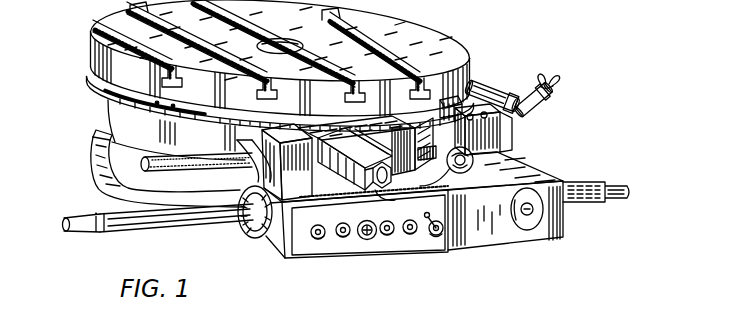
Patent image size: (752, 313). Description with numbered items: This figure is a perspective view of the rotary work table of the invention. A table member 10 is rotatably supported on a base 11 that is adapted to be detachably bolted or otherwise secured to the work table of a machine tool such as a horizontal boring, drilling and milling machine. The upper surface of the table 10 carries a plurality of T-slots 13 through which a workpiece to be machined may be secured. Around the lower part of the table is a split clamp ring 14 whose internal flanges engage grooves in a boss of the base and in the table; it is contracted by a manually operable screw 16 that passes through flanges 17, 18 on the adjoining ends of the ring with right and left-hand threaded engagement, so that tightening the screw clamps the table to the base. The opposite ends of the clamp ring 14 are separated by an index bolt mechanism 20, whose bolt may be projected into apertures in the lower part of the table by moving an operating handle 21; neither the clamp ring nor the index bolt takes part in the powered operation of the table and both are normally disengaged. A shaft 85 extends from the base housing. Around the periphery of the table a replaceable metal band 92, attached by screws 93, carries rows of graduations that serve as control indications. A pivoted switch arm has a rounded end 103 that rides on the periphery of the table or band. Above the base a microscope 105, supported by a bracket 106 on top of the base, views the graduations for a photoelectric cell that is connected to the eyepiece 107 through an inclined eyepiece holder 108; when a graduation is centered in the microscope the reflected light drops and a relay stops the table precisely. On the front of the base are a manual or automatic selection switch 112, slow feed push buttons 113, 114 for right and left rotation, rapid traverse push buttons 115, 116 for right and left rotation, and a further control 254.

The table member 10 is at (280, 58).
The base 11 is at (486, 245).
The T-slots 13 is at (214, 46).
The split clamp ring 14 is at (108, 129).
The manually operable screw 16 is at (206, 153).
The flange 17 is at (277, 163).
The flange 18 is at (387, 132).
The index bolt mechanism 20 is at (328, 121).
The operating handle 21 is at (472, 168).
The hand crank shaft 85 is at (194, 226).
The band 92 is at (210, 104).
The screws 93 is at (151, 96).
The rounded end 103 is at (443, 102).
The microscope 105 is at (492, 85).
The bracket 106 is at (500, 139).
The eyepiece 107 is at (541, 102).
The inclined eyepiece holder 108 is at (537, 120).
The selection switch 112 is at (440, 240).
The feed right push button switch 113 is at (412, 236).
The feed left push button switch 114 is at (313, 240).
The rapid right push button switch 115 is at (381, 238).
The rapid left push button switch 116 is at (342, 240).
The selector dial 254 is at (339, 241).